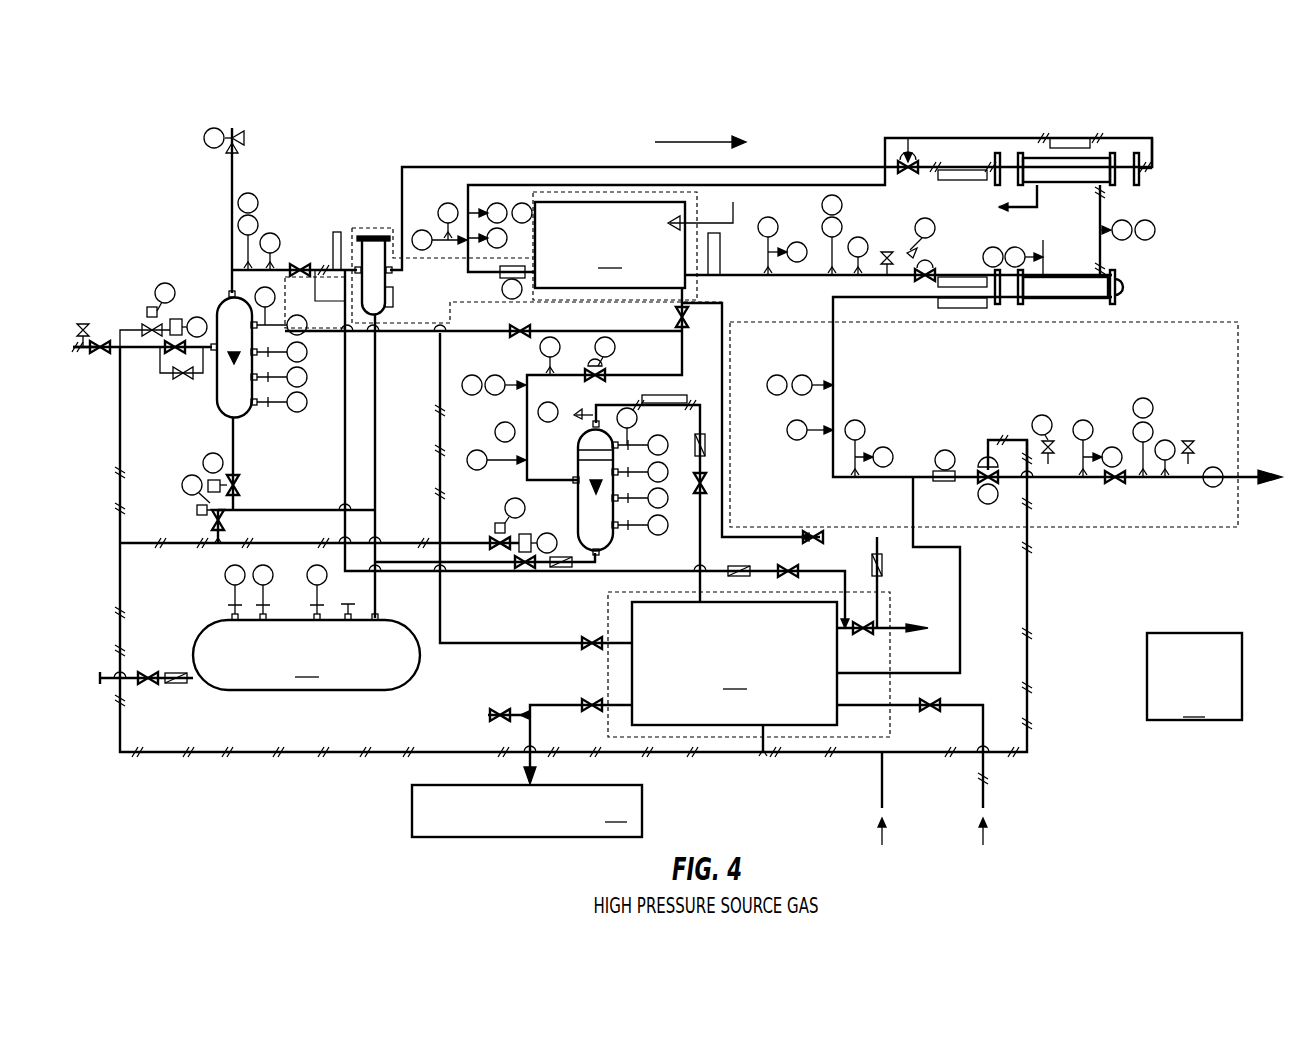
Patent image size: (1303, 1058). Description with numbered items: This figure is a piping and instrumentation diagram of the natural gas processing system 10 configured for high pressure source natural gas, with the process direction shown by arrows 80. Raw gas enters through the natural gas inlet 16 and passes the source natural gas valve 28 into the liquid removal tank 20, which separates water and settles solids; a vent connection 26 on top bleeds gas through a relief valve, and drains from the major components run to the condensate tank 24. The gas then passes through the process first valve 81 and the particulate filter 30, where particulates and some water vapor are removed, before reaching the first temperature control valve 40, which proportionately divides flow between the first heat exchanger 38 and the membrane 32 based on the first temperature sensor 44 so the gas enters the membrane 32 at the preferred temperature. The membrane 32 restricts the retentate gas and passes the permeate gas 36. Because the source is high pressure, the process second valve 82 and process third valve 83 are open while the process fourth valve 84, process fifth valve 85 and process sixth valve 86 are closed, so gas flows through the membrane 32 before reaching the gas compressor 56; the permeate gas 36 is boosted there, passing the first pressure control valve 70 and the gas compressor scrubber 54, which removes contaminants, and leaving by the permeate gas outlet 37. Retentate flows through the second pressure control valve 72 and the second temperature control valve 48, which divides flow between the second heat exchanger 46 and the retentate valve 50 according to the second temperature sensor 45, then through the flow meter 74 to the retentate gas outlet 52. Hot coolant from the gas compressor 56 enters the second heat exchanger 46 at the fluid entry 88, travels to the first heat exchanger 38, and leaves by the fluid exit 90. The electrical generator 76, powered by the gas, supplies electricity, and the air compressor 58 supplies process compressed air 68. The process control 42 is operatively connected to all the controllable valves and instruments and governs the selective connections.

The natural gas processing system 10 is at (310, 797).
The natural gas inlet 16 is at (76, 349).
The liquid removal tank 20 is at (221, 308).
The condensate tank 24 is at (279, 627).
The vent connection 26 is at (244, 133).
The source natural gas valve 28 is at (101, 340).
The particulate filter 30 is at (373, 243).
The membrane 32 is at (634, 245).
The permeate gas 36 is at (545, 704).
The permeate gas outlet 37 is at (906, 634).
The first heat exchanger 38 is at (1124, 178).
The first temperature control valve 40 is at (903, 163).
The process control 42 is at (1194, 676).
The first temperature sensor 44 is at (482, 212).
The second temperature sensor 45 is at (830, 262).
The second heat exchanger 46 is at (1124, 284).
The second temperature control valve 48 is at (923, 284).
The retentate valve 50 is at (1122, 486).
The retentate gas outlet 52 is at (1250, 484).
The gas compressor scrubber 54 is at (580, 468).
The gas compressor 56 is at (715, 575).
The air compressor 58 is at (932, 886).
The process compressed air 68 is at (932, 857).
The first pressure control valve 70 is at (606, 372).
The second pressure control valve 72 is at (984, 469).
The flow meter 74 is at (1212, 466).
The electrical generator 76 is at (527, 811).
The arrows 80 is at (684, 139).
The process first valve 81 is at (301, 265).
The process second valve 82 is at (677, 317).
The process third valve 83 is at (866, 632).
The process fourth valve 84 is at (841, 579).
The process fifth valve 85 is at (783, 565).
The process sixth valve 86 is at (517, 328).
The fluid entry 88 is at (1044, 246).
The fluid exit 90 is at (1032, 205).